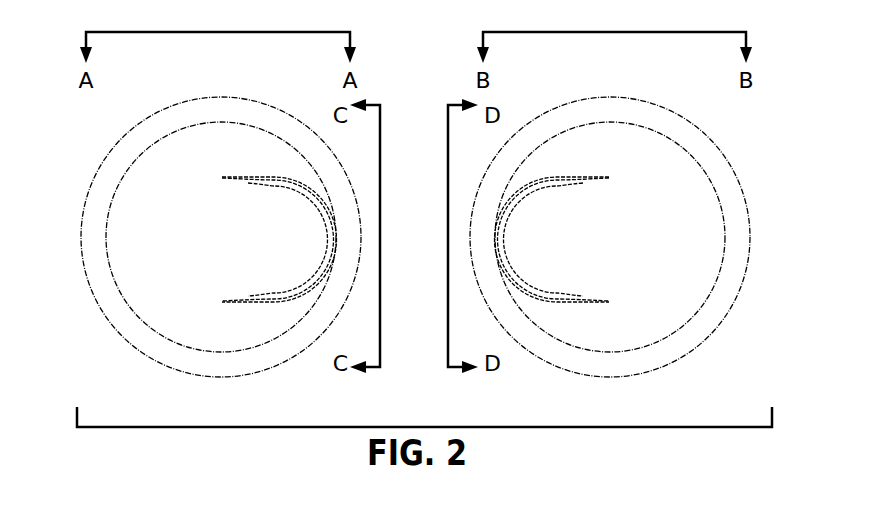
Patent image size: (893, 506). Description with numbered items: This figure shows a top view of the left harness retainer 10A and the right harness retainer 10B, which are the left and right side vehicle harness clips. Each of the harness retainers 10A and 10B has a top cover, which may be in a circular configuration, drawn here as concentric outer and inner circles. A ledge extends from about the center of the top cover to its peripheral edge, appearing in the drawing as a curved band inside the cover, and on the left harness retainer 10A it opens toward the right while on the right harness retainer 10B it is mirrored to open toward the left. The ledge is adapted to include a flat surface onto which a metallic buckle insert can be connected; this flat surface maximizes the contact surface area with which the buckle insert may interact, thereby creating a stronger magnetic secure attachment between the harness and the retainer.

The left harness retainer 10A is at (192, 242).
The right harness retainer 10B is at (635, 254).